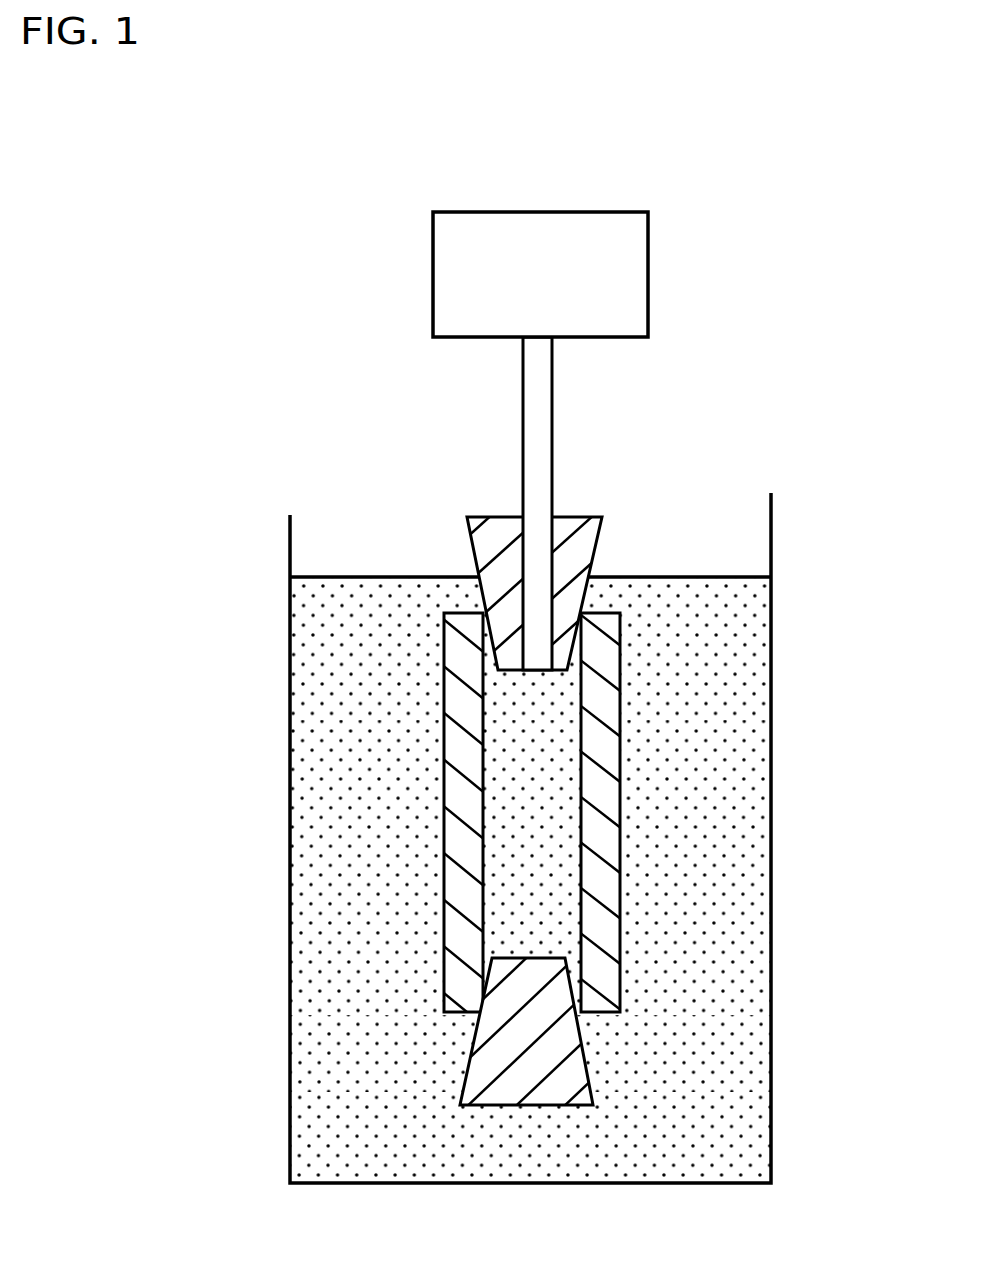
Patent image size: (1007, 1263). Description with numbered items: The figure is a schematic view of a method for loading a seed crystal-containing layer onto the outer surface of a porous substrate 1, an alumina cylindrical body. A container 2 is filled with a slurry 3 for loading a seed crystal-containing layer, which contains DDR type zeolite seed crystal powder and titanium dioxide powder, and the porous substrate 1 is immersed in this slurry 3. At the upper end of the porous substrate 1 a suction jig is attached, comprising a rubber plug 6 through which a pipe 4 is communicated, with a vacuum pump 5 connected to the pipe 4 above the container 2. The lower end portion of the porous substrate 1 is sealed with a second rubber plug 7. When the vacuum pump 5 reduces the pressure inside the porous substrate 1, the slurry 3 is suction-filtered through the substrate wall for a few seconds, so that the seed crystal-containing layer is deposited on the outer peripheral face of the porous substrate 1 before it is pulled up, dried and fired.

The porous substrate 1 is at (620, 848).
The container 2 is at (771, 716).
The slurry for loading a seed crystal-containing layer 3 is at (383, 593).
The pipe 4 is at (552, 433).
The vacuum pump 5 is at (648, 282).
The rubber plug 6 is at (597, 541).
The rubber plug 7 is at (585, 1053).